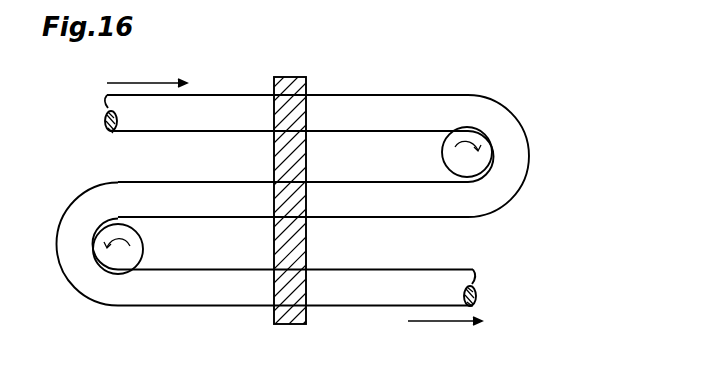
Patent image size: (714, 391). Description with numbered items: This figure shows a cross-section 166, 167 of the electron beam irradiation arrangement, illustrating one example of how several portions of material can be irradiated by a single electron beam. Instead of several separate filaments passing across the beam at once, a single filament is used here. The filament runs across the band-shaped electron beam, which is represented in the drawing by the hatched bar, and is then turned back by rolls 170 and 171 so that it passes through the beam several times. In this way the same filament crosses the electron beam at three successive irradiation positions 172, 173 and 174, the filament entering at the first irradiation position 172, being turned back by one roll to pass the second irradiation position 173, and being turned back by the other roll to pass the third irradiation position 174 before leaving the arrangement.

The cross-section 166 is at (296, 215).
The cross-section 167 is at (302, 215).
The roll 170 is at (447, 152).
The roll 171 is at (142, 250).
The irradiation position 172 is at (290, 105).
The irradiation position 173 is at (294, 186).
The irradiation position 174 is at (298, 275).